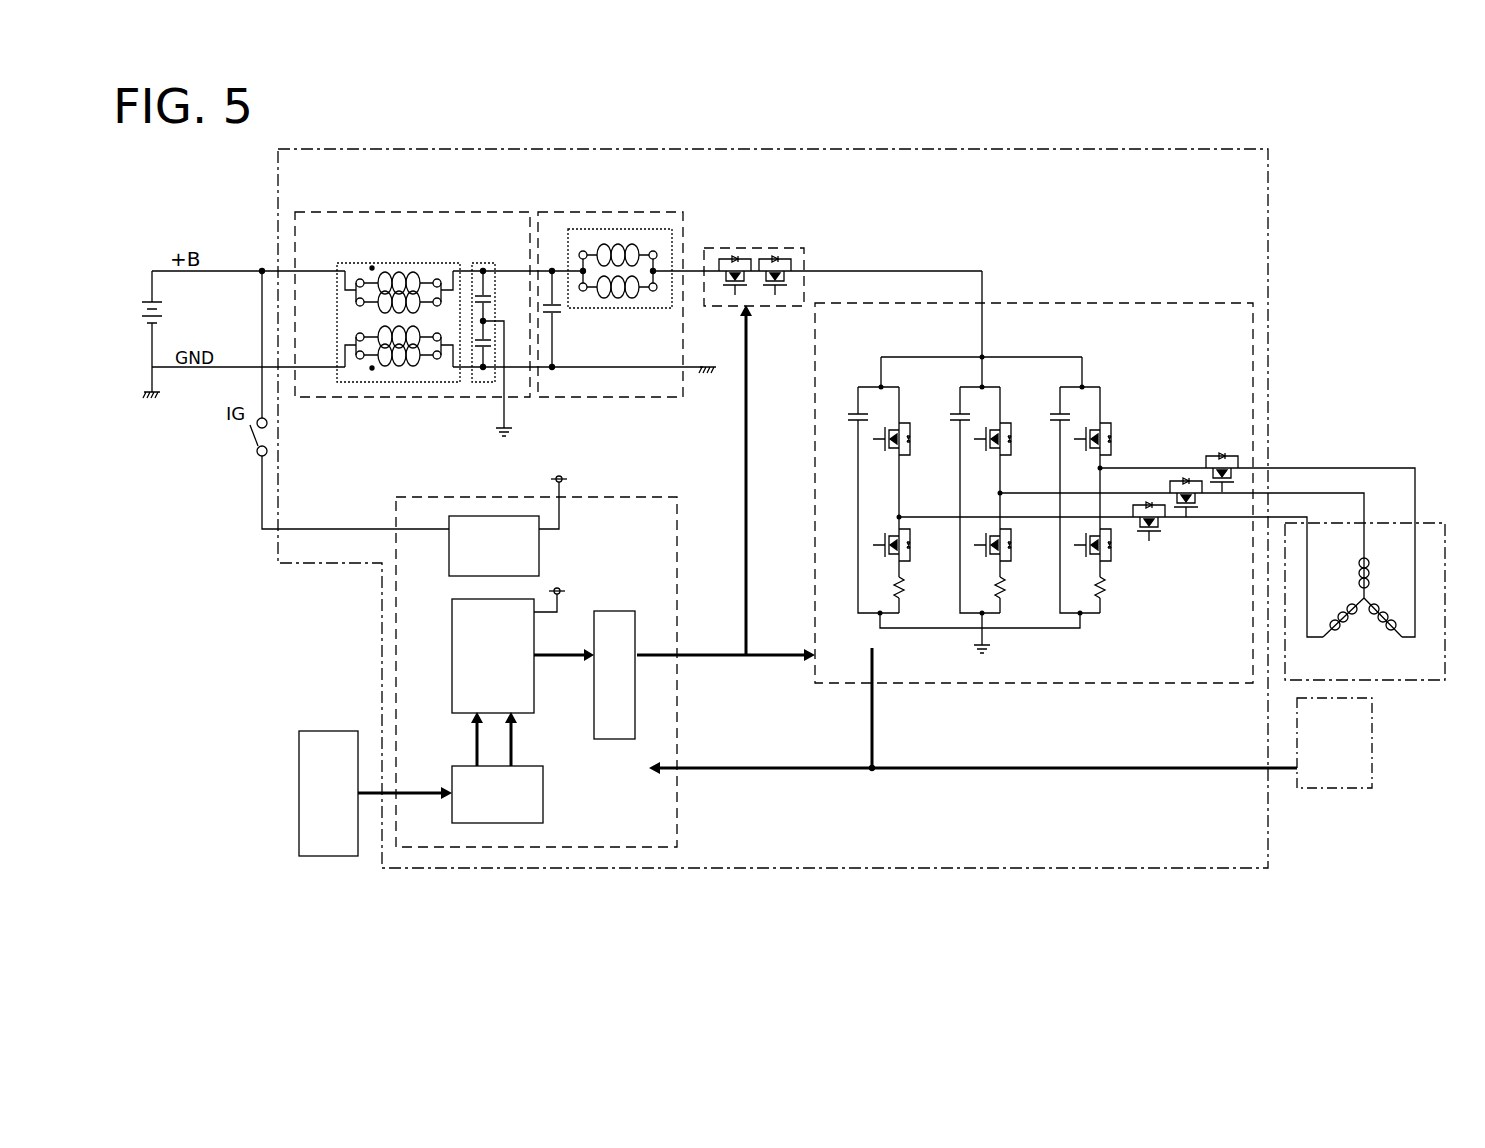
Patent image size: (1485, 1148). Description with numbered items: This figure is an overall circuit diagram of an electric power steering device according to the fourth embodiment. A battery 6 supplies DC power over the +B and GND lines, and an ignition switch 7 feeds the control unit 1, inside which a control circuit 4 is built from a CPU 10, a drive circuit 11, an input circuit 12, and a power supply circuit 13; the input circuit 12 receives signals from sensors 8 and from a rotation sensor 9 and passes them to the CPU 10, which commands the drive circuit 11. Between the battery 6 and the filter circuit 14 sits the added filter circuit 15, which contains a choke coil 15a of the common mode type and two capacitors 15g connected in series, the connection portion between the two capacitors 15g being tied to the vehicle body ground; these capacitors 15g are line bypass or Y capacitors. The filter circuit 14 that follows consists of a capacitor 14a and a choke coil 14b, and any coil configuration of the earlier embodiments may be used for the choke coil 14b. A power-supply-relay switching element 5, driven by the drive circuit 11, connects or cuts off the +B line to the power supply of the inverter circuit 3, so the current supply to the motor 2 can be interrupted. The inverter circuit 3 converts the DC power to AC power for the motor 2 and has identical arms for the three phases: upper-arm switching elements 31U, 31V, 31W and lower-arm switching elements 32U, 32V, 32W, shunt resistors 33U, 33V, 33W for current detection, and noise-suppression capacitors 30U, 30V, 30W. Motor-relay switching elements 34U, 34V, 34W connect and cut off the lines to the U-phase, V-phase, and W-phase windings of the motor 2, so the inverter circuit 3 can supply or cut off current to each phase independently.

The control unit 1 is at (1272, 292).
The motor 2 is at (1440, 522).
The inverter circuit 3 is at (1144, 300).
The control circuit 4 is at (680, 540).
The power-supply-relay switching element 5 is at (764, 246).
The battery 6 is at (146, 300).
The ignition switch 7 is at (250, 449).
The sensors 8 is at (322, 856).
The rotation sensor 9 is at (1345, 790).
The CPU 10 is at (452, 648).
The drive circuit 11 is at (613, 611).
The input circuit 12 is at (543, 792).
The power supply circuit 13 is at (449, 568).
The filter circuit 14 is at (656, 212).
The capacitor 14a is at (553, 316).
The choke coil 14b is at (642, 310).
The filter circuit 15 is at (462, 212).
The choke coil 15a is at (366, 264).
The capacitors 15g is at (478, 264).
The noise-suppression capacitor 30U is at (852, 410).
The noise-suppression capacitor 30V is at (955, 425).
The noise-suppression capacitor 30W is at (1055, 425).
The upper-arm switching element 31U is at (910, 436).
The upper-arm switching element 31V is at (1011, 436).
The upper-arm switching element 31W is at (1111, 436).
The lower-arm switching element 32U is at (910, 548).
The lower-arm switching element 32V is at (1011, 548).
The lower-arm switching element 32W is at (1111, 548).
The shunt resistor 33U is at (904, 586).
The shunt resistor 33V is at (1005, 586).
The shunt resistor 33W is at (1104, 586).
The motor-relay switching element 34U is at (1158, 544).
The motor-relay switching element 34V is at (1186, 475).
The motor-relay switching element 34W is at (1226, 452).